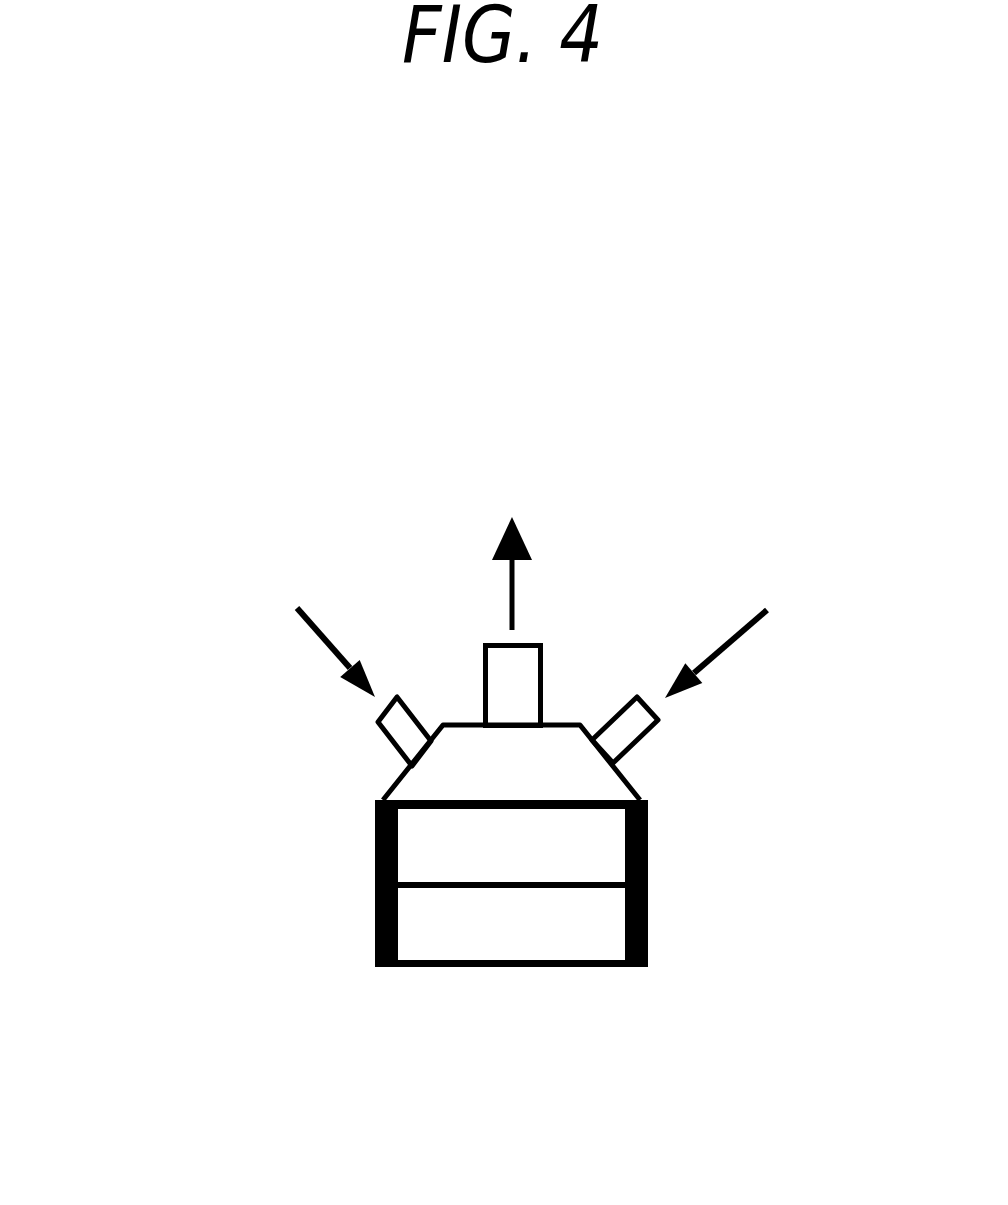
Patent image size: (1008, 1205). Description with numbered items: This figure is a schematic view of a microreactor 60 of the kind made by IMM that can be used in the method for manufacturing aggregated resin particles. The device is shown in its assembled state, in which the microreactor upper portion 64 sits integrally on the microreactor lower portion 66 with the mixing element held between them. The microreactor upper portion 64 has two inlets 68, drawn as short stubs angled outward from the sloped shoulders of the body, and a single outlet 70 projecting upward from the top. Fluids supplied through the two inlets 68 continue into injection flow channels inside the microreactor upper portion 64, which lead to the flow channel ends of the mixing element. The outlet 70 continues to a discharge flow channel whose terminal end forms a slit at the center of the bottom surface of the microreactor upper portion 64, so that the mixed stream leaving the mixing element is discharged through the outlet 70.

The sprayer unit 60 is at (495, 737).
The microreactor upper portion 64 is at (463, 823).
The microreactor lower portion 66 is at (503, 930).
The inlets 68 is at (397, 727).
The outlet 70 is at (497, 677).